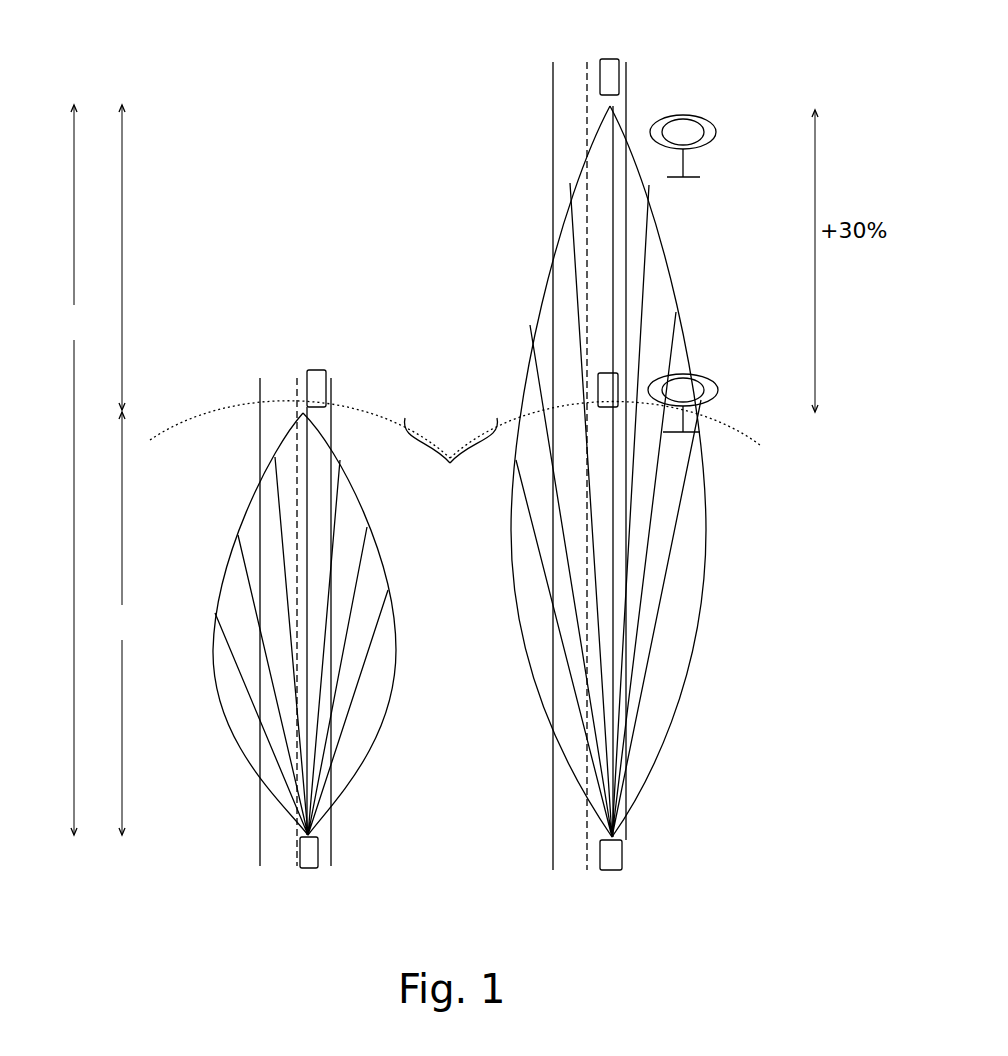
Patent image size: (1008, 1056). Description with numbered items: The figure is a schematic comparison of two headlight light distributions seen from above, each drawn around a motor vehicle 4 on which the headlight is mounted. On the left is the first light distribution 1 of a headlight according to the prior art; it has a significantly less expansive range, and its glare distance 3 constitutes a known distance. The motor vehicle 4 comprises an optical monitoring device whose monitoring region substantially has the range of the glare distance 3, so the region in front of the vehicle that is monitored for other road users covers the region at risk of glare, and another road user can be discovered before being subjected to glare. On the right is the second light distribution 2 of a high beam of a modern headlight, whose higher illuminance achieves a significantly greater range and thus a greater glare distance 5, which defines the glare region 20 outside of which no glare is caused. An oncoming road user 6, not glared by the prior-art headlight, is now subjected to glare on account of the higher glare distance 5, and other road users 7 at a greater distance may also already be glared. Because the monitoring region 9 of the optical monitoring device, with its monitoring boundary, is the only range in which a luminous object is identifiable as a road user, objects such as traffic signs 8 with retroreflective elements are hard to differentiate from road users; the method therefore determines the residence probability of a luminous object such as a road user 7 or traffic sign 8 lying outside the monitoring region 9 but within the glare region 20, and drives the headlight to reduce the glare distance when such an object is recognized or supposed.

The first light distribution 1 is at (397, 655).
The second light distribution 2 is at (703, 655).
The glare distance 3 is at (156, 470).
The motor vehicle 4 is at (318, 870).
The glare distance 5 is at (74, 470).
The road user 6 is at (331, 378).
The road user 7 is at (628, 78).
The traffic sign 8 is at (700, 147).
The monitoring region 9 is at (455, 450).
The glare region 20 is at (153, 148).